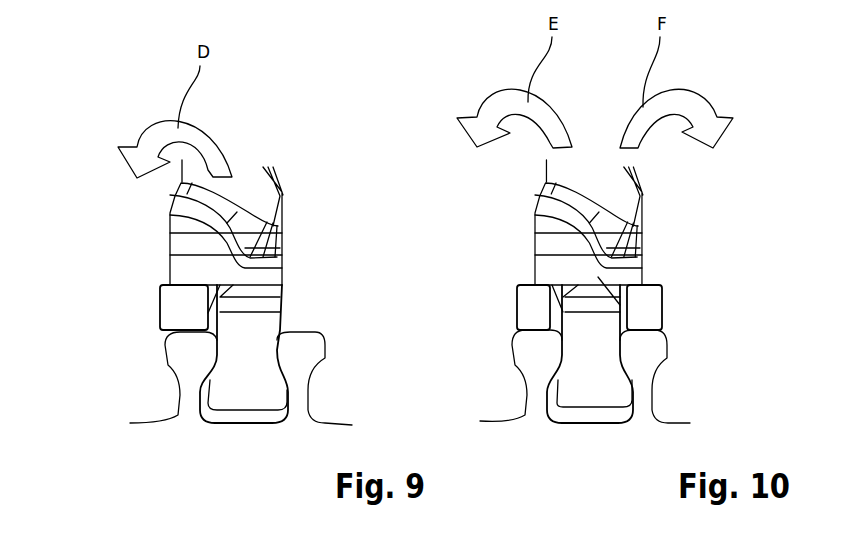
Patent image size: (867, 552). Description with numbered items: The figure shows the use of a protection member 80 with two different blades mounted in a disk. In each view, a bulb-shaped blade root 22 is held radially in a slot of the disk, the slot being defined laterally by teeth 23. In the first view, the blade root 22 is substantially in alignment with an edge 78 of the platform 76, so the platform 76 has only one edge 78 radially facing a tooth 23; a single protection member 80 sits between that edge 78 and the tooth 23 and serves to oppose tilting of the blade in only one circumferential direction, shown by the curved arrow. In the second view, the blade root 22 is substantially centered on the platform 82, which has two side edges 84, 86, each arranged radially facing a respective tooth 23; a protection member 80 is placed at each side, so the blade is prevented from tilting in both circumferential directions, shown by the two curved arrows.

In FIG. 9, the blade root 22 is at (237, 387).
In FIG. 10, the blade root 22 is at (582, 388).
In FIG. 9, the tooth 23 is at (175, 350).
In FIG. 10, the tooth 23 is at (523, 350).
In FIG. 9, the platform 76 is at (272, 277).
In FIG. 9, the edge 78 is at (173, 275).
In FIG. 9, the protection member 80 is at (175, 311).
In FIG. 10, the protection member 80 is at (515, 312).
In FIG. 10, the platform 82 is at (628, 308).
In FIG. 10, the side edge 84 is at (645, 282).
In FIG. 10, the side edge 86 is at (535, 284).